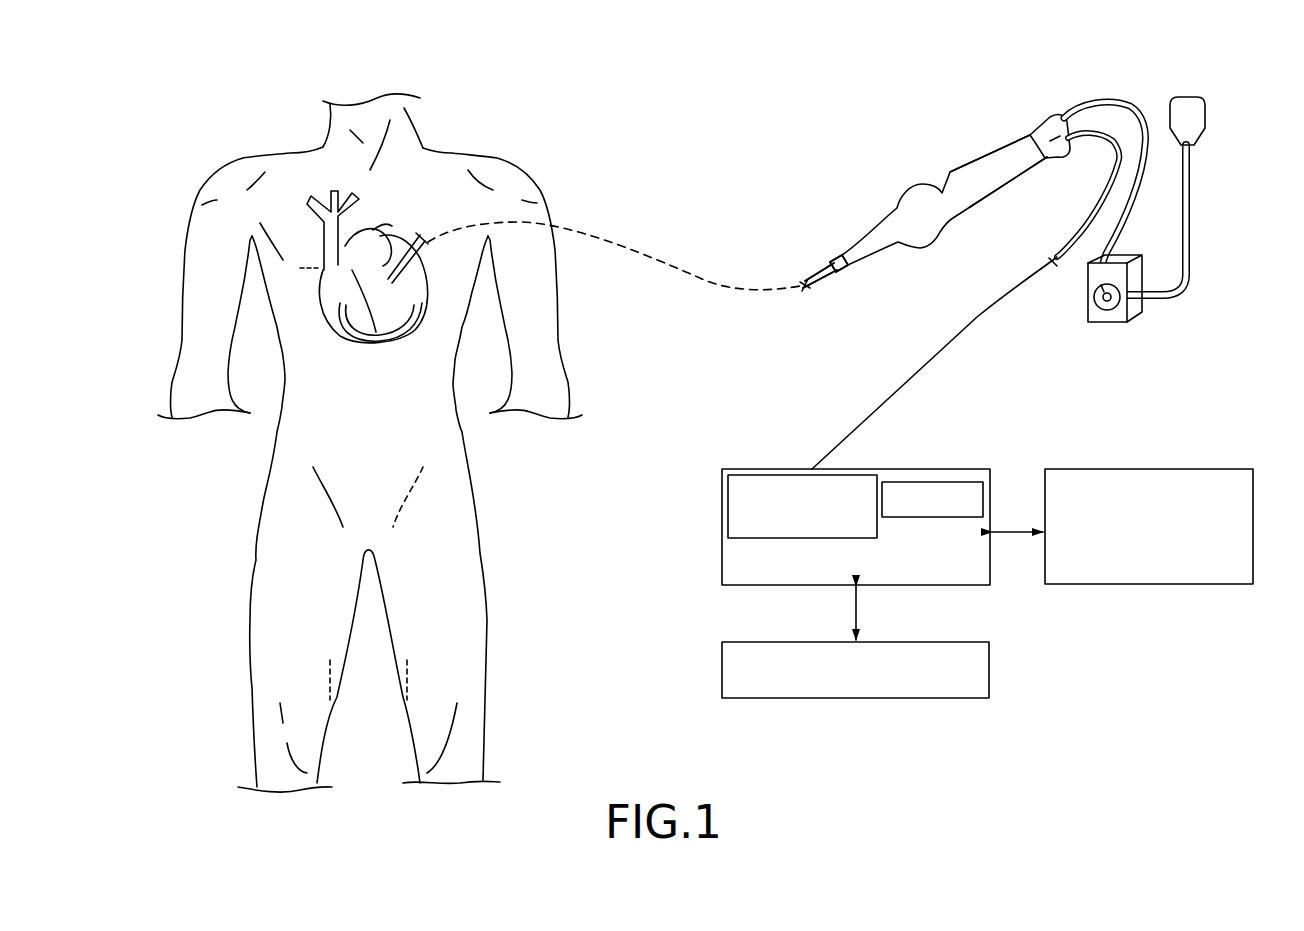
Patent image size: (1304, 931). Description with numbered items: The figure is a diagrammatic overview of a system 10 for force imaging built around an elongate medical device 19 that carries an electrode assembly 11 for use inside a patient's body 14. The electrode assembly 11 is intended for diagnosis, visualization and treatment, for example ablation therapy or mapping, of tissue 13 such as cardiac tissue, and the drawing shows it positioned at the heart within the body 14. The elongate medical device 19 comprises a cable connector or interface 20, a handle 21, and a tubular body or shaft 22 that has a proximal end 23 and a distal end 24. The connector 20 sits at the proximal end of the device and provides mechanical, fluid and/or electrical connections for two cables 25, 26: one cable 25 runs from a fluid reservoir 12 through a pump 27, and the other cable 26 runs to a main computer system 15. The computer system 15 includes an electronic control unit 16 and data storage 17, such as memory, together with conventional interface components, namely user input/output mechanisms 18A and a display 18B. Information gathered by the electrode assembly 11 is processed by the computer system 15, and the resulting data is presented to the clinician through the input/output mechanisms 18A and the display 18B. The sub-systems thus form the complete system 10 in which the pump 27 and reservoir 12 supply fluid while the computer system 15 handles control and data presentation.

The system for force imaging 10 is at (692, 115).
The electrode assembly 11 is at (367, 327).
The fluid reservoir 12 is at (1205, 122).
The tissue 13 is at (422, 307).
The patient's body 14 is at (258, 548).
The main computer system 15 is at (936, 468).
The electronic control unit 16 is at (728, 510).
The data storage 17 is at (938, 517).
The user input/output mechanisms 18A is at (990, 647).
The display 18B is at (1133, 469).
The elongate medical device 19 is at (933, 160).
The cable connector or interface 20 is at (1040, 127).
The handle 21 is at (981, 158).
The tubular body or shaft 22 is at (802, 277).
The proximal end 23 is at (833, 278).
The distal end 24 is at (373, 230).
The cable 25 is at (1117, 101).
The cable 26 is at (1092, 140).
The pump 27 is at (1140, 313).